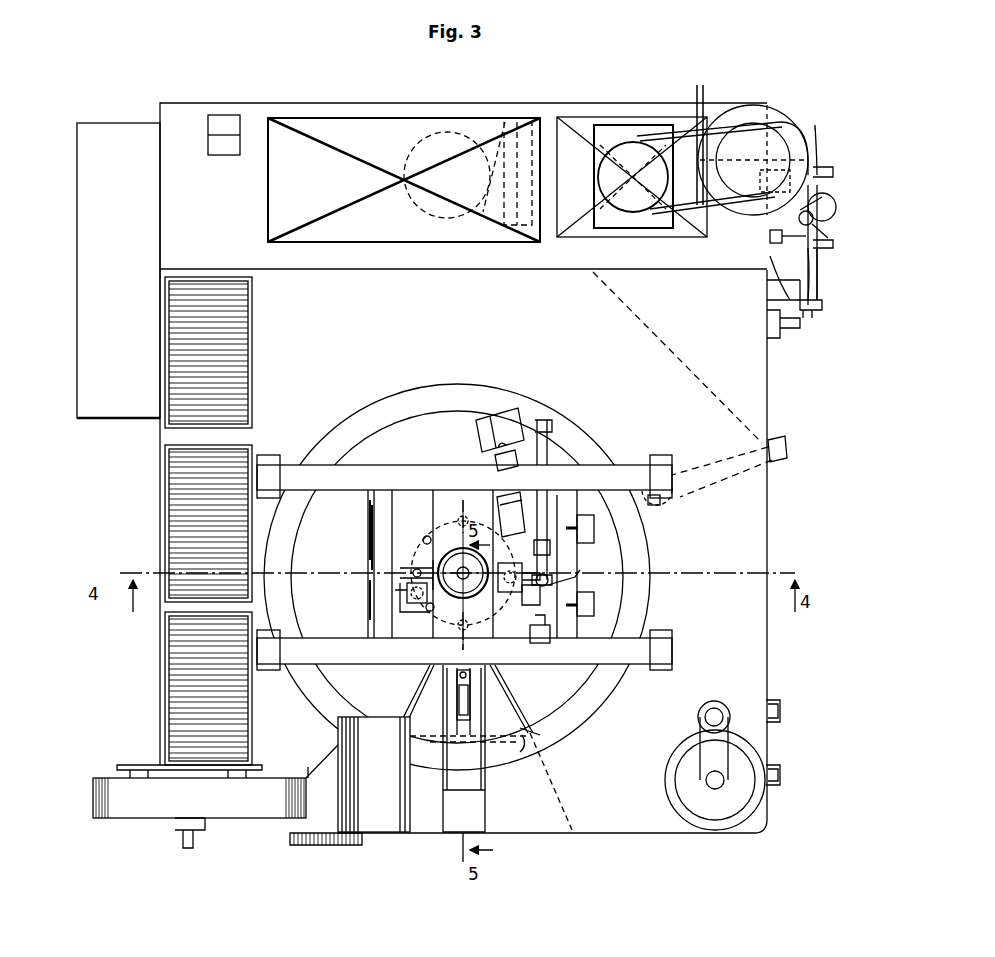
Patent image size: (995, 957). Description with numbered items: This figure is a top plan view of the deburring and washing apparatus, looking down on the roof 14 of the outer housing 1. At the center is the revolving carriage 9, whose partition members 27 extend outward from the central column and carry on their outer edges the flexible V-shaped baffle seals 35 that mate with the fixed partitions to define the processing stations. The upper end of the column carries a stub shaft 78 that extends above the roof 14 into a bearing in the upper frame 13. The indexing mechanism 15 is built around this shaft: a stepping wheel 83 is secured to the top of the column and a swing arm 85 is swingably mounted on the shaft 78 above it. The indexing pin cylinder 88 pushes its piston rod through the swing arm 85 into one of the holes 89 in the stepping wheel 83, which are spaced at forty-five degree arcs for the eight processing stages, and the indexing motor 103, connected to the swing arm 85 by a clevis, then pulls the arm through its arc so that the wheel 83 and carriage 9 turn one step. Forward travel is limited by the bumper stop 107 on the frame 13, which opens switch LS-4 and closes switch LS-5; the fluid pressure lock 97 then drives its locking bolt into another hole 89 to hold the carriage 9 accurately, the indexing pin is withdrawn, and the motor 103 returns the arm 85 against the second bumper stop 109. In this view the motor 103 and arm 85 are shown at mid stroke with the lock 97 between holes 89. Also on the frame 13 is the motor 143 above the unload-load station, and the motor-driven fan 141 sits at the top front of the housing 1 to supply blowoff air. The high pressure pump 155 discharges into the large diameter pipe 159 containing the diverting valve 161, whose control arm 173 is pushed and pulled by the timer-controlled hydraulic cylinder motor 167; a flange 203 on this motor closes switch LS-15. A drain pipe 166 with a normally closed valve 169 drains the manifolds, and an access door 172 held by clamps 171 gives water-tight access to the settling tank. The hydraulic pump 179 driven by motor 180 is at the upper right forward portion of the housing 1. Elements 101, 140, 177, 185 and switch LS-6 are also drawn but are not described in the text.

The housing 1 is at (778, 672).
The revolving carriage 9 is at (580, 703).
The frame 13 is at (415, 465).
The roof 14 is at (767, 387).
The indexing mechanism 15 is at (545, 425).
The partition member 27 is at (530, 727).
The V-shaped baffle seal 35 is at (524, 738).
The stub shaft 78 is at (450, 560).
The stepping wheel 83 is at (420, 562).
The swing arm 85 is at (542, 590).
The indexing pin cylinder 88 is at (512, 566).
The holes 89 is at (428, 536).
The fluid pressure lock 97 is at (417, 605).
The rod 101 is at (553, 580).
The indexing motor 103 is at (540, 435).
The bumper stop 107 is at (505, 515).
The second bumper stop 109 is at (540, 640).
The louver panel 140 is at (178, 686).
The motor-driven fan 141 is at (240, 806).
The motor 143 is at (470, 700).
The pump 155 is at (650, 128).
The large diameter pipe 159 is at (812, 132).
The diverting valve 161 is at (833, 170).
The drain pipe 166 is at (775, 458).
The hydraulic cylinder motor 167 is at (810, 315).
The normally closed valve 169 is at (812, 290).
The clamps 171 is at (770, 238).
The access door 172 is at (330, 843).
The control arm 173 is at (800, 217).
The bracket 177 is at (780, 778).
The pump 179 is at (735, 798).
The motor 180 is at (700, 712).
The bracket 185 is at (780, 716).
The flange 203 is at (770, 258).
The switch LS-4 is at (594, 607).
The switch LS-5 is at (594, 522).
The limit switch LS-6 is at (770, 250).
The switch LS-15 is at (753, 160).